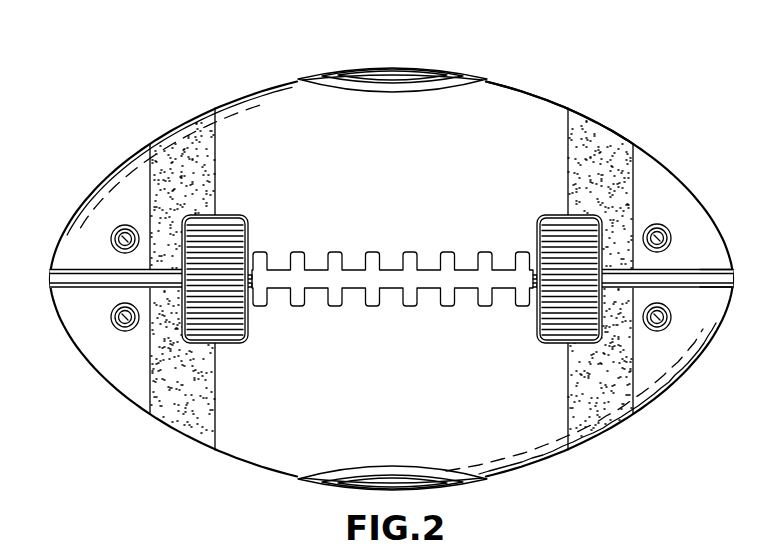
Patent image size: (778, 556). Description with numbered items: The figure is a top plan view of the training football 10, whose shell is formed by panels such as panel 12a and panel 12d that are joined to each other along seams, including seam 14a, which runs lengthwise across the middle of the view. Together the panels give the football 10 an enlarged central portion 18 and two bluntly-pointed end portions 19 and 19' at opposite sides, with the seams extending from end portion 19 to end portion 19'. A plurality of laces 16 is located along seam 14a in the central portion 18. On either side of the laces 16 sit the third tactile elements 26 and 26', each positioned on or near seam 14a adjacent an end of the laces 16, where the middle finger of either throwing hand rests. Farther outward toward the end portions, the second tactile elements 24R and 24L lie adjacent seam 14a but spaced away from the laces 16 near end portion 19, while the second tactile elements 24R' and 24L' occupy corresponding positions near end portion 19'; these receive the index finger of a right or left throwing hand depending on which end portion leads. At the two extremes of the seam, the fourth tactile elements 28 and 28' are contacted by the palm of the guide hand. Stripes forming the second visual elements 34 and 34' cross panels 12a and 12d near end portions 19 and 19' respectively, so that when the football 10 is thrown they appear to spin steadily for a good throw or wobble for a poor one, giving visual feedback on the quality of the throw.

The football 10 is at (672, 138).
The panel 12a is at (538, 100).
The panel 12d is at (256, 460).
The seam 14a is at (708, 270).
The laces 16 is at (412, 252).
The central portion 18 is at (406, 156).
The end portion 19 is at (737, 294).
The end portion 19' is at (101, 260).
The second tactile element 24L is at (687, 216).
The second tactile element 24R is at (687, 343).
The second tactile element 24L' is at (84, 342).
The second tactile element 24R' is at (92, 215).
The third tactile element 26 is at (550, 299).
The third tactile element 26' is at (233, 298).
The fourth tactile element 28 is at (392, 461).
The fourth tactile element 28' is at (392, 52).
The second visual element 34 is at (600, 268).
The second visual element 34' is at (182, 268).